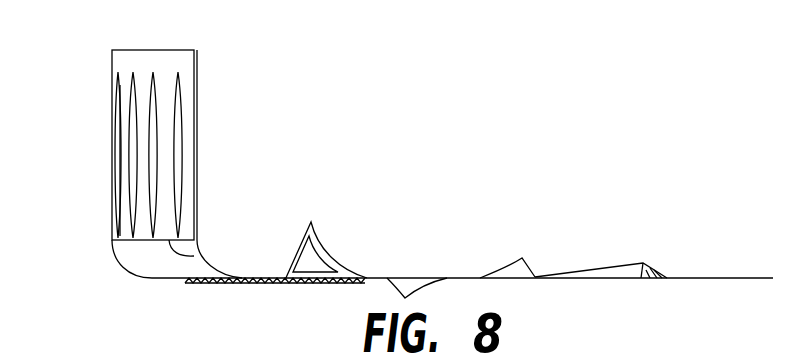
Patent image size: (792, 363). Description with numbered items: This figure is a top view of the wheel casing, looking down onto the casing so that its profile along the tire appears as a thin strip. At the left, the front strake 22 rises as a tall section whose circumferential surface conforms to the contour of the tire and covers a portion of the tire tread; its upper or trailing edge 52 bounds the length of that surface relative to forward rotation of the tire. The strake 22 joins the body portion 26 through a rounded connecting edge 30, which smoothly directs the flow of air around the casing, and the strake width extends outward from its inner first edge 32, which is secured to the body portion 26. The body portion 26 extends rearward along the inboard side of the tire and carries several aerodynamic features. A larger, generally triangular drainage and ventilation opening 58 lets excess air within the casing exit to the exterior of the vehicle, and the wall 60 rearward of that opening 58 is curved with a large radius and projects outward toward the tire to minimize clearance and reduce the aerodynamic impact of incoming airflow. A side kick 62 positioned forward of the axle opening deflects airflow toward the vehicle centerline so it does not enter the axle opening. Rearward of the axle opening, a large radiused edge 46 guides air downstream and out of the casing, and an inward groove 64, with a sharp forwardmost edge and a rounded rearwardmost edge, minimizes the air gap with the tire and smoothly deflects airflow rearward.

The front strake 22 is at (142, 152).
The body portion 26 is at (705, 278).
The rounded connecting edge 30 is at (142, 259).
The first edge 32 is at (196, 248).
The radiused edge 46 is at (506, 268).
The trailing edge 52 is at (197, 153).
The drainage and ventilation opening 58 is at (310, 260).
The wall 60 is at (327, 248).
The side kick 62 is at (396, 287).
The inward groove 64 is at (603, 268).